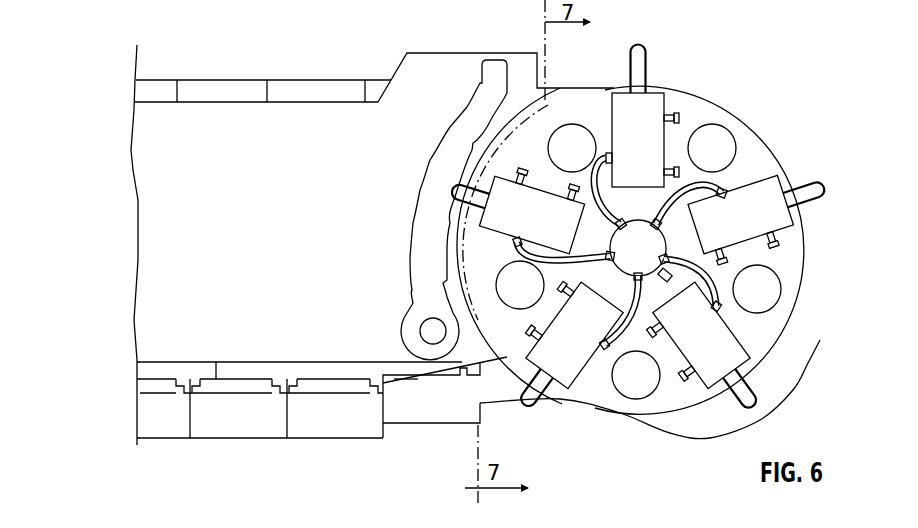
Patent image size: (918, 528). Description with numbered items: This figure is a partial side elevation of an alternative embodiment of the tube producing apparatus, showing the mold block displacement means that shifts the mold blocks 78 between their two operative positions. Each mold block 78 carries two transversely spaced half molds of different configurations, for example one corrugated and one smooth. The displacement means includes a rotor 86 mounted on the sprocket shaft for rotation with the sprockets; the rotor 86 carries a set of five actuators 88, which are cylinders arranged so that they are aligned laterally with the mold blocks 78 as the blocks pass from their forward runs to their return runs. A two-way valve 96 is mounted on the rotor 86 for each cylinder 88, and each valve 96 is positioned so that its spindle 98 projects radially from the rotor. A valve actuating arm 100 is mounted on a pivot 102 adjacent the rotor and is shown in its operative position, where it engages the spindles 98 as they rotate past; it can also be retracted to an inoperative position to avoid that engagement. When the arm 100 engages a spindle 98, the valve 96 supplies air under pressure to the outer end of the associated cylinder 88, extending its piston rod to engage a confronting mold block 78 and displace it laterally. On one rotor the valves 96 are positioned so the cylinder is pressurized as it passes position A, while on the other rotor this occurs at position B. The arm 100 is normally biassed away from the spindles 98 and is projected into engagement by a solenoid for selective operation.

The mold block 78 is at (320, 92).
The rotor 86 is at (590, 392).
The actuator 88 is at (715, 148).
The two-way valve 96 is at (651, 110).
The spindle 98 is at (640, 63).
The valve actuating arm 100 is at (453, 141).
The pivot 102 is at (432, 334).
The position A is at (639, 407).
The position B is at (786, 270).